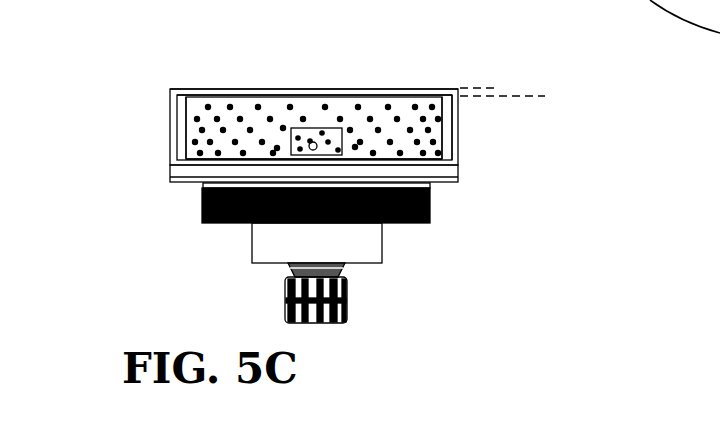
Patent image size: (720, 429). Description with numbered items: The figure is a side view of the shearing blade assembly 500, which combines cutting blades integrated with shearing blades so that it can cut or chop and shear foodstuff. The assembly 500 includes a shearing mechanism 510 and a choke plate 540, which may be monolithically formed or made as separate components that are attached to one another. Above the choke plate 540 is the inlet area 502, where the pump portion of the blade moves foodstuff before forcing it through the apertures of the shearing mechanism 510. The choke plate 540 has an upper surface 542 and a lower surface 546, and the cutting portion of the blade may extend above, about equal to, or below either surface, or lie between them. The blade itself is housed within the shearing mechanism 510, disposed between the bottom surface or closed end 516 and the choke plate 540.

The shearing blade assembly 500 is at (188, 45).
The choke plate 540 is at (318, 88).
The inlet area 502 is at (369, 78).
The upper surface 542 is at (473, 88).
The lower surface 546 is at (541, 95).
The shearing mechanism 510 is at (442, 131).
The closed end 516 is at (433, 168).